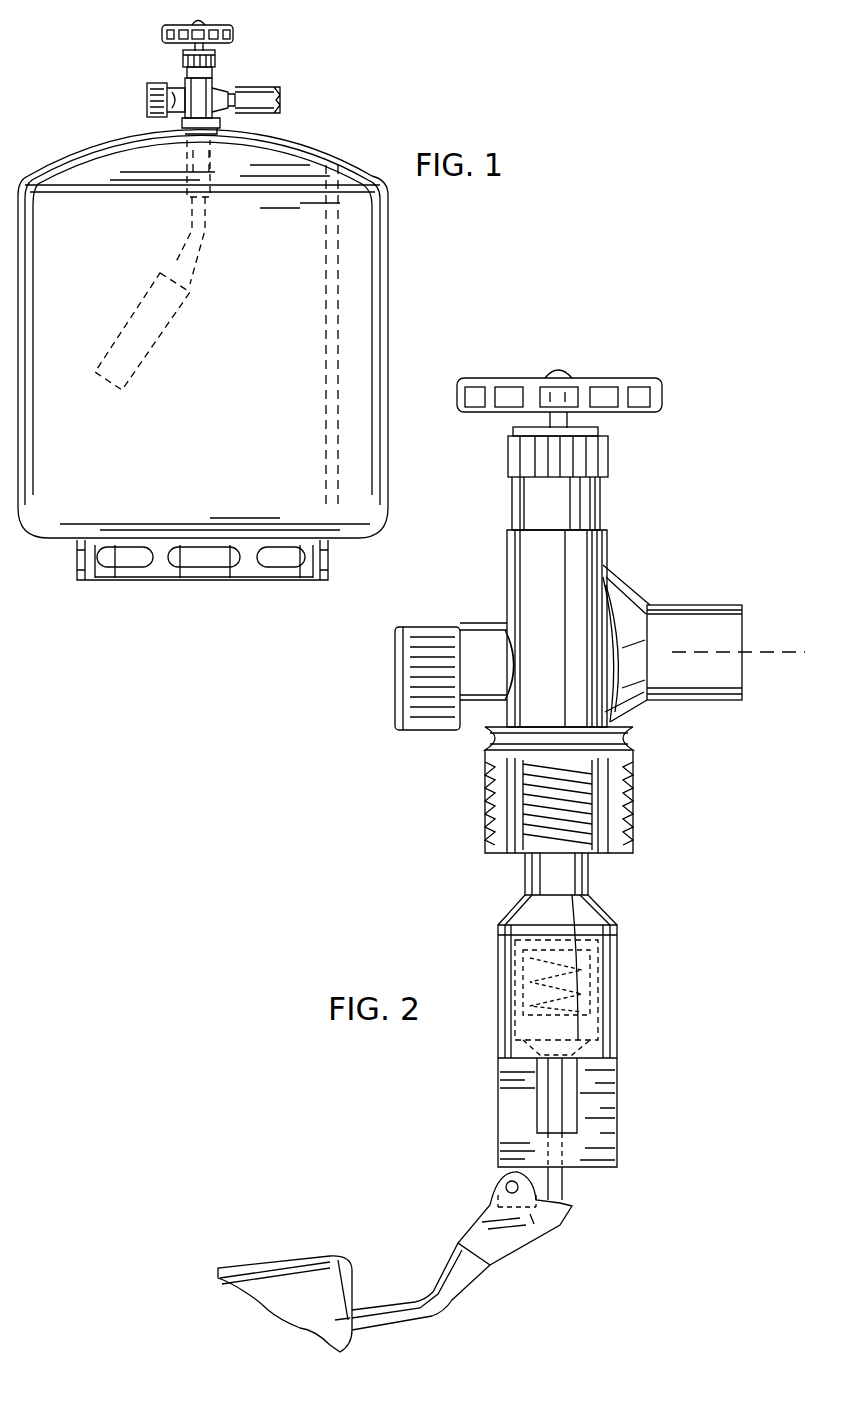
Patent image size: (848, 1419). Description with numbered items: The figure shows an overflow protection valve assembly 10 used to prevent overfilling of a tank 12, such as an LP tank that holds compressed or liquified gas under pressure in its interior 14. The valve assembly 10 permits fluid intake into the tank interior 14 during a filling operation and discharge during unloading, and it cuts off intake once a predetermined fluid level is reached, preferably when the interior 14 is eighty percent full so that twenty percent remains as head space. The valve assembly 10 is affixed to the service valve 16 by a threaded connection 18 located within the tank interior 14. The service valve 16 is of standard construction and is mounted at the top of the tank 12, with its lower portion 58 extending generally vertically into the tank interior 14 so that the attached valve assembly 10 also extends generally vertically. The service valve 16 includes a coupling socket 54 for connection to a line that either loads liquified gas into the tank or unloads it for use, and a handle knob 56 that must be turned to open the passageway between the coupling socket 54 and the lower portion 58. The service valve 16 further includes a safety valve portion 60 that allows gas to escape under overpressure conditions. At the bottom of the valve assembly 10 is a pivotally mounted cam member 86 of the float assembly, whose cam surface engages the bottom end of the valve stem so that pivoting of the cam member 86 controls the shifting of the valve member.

In FIG. 2, the valve assembly 10 is at (684, 950).
In FIG. 1, the tank 12 is at (388, 303).
In FIG. 1, the interior 14 is at (70, 232).
In FIG. 2, the service valve 16 is at (655, 566).
In FIG. 2, the threaded connection 18 is at (516, 868).
In FIG. 2, the coupling socket 54 is at (697, 598).
In FIG. 2, the handle knob 56 is at (630, 367).
In FIG. 2, the lower portion 58 is at (618, 803).
In FIG. 2, the safety valve portion 60 is at (490, 621).
In FIG. 2, the cam member 86 is at (533, 1247).